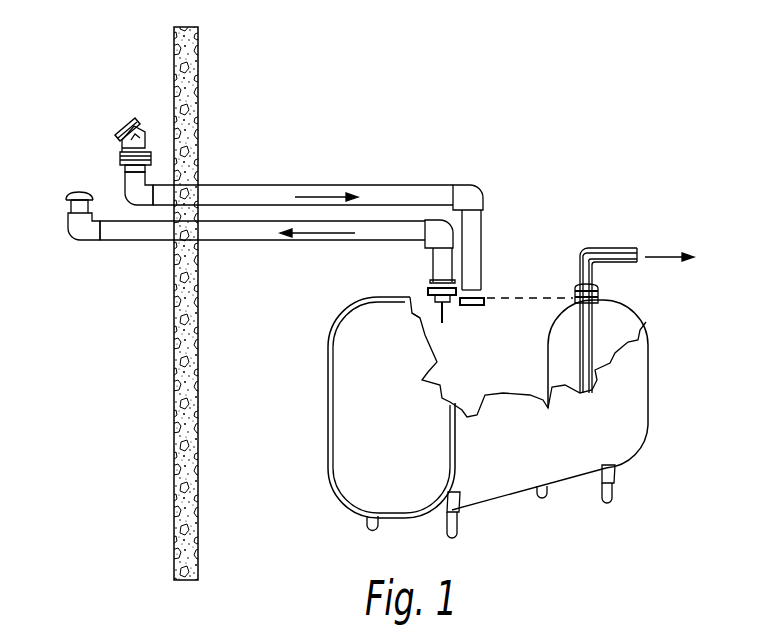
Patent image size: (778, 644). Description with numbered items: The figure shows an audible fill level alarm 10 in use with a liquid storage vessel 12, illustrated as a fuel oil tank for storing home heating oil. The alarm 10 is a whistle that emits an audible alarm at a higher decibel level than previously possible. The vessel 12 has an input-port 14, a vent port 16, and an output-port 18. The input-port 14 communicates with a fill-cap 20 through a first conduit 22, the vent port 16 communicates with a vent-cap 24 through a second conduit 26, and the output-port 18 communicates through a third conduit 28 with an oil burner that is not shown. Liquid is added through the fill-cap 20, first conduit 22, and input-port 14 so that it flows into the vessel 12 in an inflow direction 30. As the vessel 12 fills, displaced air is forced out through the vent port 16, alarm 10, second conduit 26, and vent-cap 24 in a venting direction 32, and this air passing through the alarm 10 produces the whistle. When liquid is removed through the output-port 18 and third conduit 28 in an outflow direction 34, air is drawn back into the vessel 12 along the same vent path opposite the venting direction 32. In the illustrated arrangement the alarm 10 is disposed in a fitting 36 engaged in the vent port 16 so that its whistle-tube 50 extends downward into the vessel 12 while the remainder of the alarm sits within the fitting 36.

The audible fill level alarm 10 is at (428, 283).
The liquid storage vessel 12 is at (648, 417).
The input-port 14 is at (486, 297).
The vent port 16 is at (413, 320).
The output-port 18 is at (604, 297).
The fill-cap 20 is at (138, 121).
The first conduit 22 is at (280, 185).
The vent-cap 24 is at (75, 192).
The second conduit 26 is at (258, 242).
The third conduit 28 is at (608, 248).
The inflow direction 30 is at (322, 196).
The venting direction 32 is at (328, 236).
The outflow direction 34 is at (662, 256).
The fitting 36 is at (430, 283).
The whistle-tube 50 is at (446, 322).